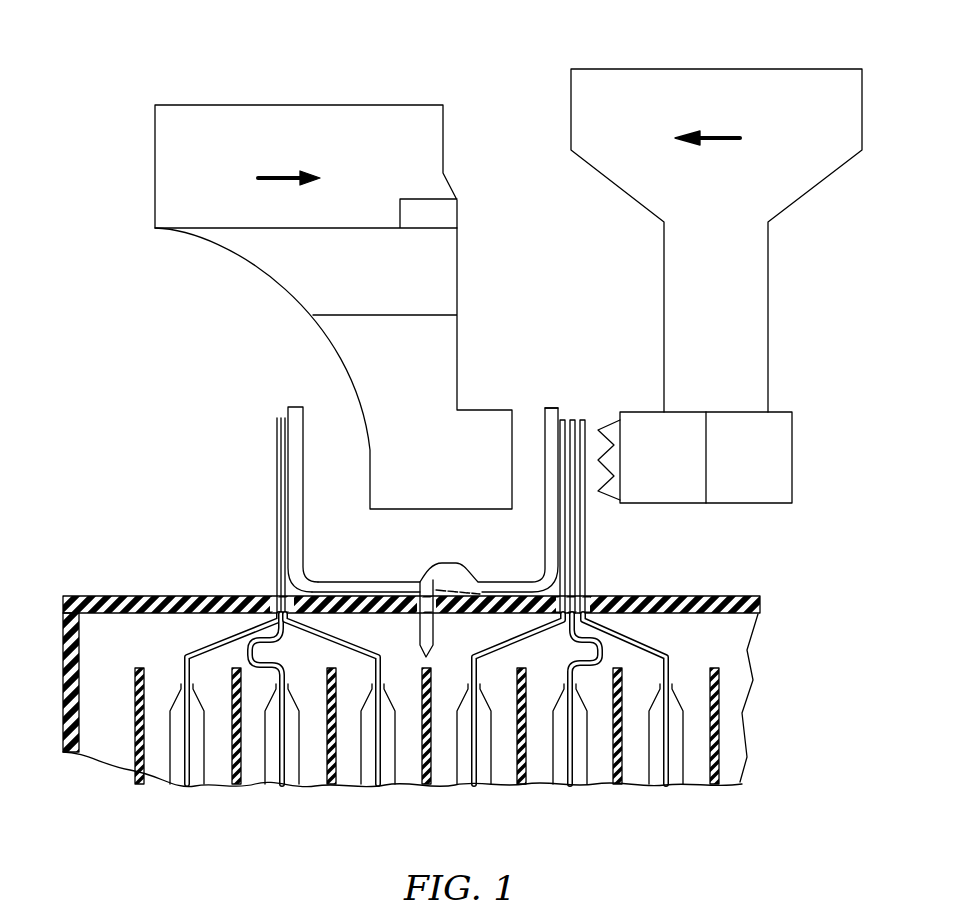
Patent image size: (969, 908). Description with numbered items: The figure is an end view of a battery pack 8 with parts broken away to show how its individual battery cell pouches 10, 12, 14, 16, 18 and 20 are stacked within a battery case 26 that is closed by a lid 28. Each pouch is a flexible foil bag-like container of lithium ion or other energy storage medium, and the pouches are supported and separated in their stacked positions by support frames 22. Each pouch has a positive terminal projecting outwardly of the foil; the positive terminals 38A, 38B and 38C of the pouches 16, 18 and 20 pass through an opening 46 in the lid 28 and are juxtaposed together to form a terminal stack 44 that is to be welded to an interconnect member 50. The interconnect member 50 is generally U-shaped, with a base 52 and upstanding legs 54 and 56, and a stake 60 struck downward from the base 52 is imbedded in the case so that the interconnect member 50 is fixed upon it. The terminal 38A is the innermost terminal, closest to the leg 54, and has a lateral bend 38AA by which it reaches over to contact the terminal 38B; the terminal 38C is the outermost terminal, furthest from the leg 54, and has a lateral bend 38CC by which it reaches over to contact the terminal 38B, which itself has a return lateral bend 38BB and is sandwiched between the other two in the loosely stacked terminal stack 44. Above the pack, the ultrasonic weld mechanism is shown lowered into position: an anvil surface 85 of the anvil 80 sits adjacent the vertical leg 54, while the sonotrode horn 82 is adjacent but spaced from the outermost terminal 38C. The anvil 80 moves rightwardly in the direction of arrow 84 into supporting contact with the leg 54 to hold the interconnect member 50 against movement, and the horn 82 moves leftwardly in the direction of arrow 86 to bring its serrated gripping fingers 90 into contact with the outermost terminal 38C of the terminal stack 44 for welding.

The battery pack 8 is at (221, 566).
The battery cell pouch 10 is at (176, 762).
The battery cell pouch 12 is at (272, 766).
The battery cell pouch 14 is at (367, 762).
The battery cell pouch 16 is at (460, 766).
The battery cell pouch 18 is at (556, 766).
The battery cell pouch 20 is at (656, 766).
The support frame 22 is at (721, 733).
The battery case 26 is at (63, 655).
The lid 28 is at (130, 605).
The positive terminal 38A is at (563, 420).
The positive terminal 38B is at (573, 420).
The positive terminal 38C is at (583, 420).
The lateral bend 38AA is at (533, 620).
The return lateral bend 38BB is at (657, 651).
The lateral bend 38CC is at (625, 634).
The terminal stack 44 is at (596, 420).
The opening 46 is at (585, 594).
The interconnect member 50 is at (352, 590).
The base 52 is at (375, 590).
The leg 54 is at (552, 408).
The leg 56 is at (293, 407).
The stake 60 is at (440, 645).
The anvil 80 is at (318, 107).
The sonotrode horn 82 is at (625, 75).
The arrow 84 is at (285, 174).
The anvil surface 85 is at (512, 470).
The arrow 86 is at (717, 136).
The serrated gripping fingers 90 is at (592, 474).